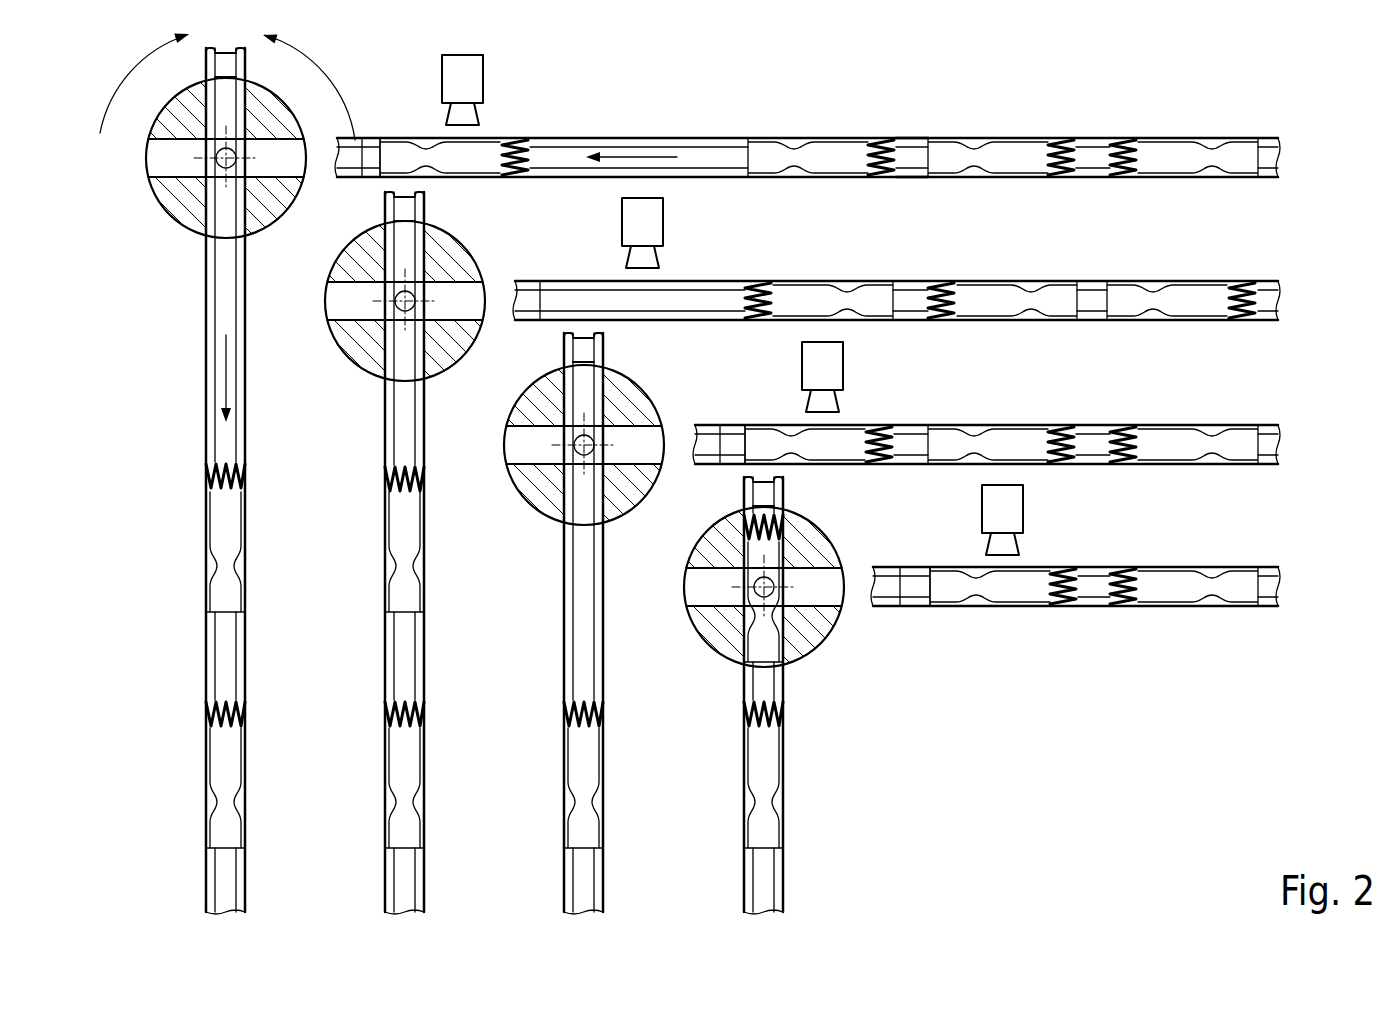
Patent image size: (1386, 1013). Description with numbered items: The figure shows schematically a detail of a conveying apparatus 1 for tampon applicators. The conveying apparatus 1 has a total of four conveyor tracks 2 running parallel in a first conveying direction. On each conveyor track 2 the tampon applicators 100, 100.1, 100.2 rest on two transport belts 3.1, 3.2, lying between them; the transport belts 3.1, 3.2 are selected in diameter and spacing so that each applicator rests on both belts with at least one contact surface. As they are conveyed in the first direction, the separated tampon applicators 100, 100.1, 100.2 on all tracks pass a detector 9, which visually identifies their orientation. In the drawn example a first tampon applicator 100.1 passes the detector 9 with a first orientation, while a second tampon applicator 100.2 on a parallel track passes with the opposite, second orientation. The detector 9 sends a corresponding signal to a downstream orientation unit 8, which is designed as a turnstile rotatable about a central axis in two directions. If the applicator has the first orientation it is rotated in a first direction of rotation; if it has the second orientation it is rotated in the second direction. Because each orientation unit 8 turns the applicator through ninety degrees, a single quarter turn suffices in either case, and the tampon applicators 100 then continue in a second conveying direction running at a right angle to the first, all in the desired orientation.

The conveying apparatus 1 is at (993, 93).
The conveyor track 2 is at (835, 305).
The transport belt 3.1 is at (913, 143).
The transport belt 3.2 is at (910, 175).
The orientation unit 8 is at (153, 236).
The detector 9 is at (466, 77).
The tampon applicator 100 is at (215, 530).
The first tampon applicator 100.1 is at (400, 162).
The second tampon applicator 100.2 is at (803, 303).